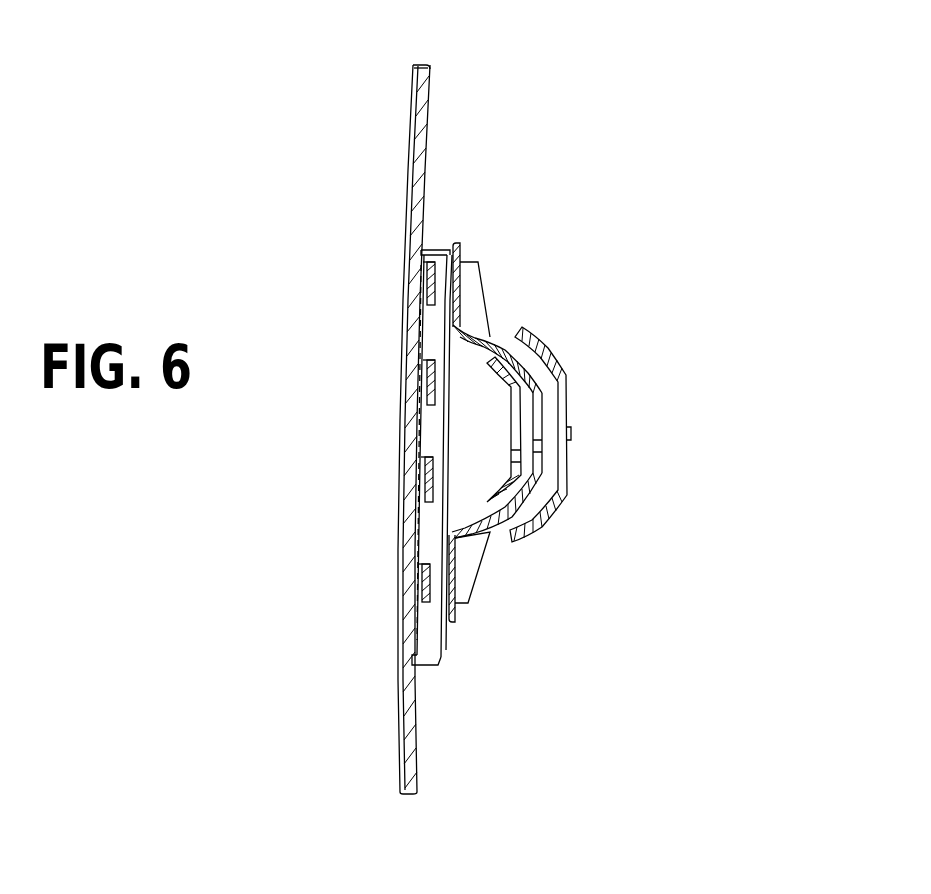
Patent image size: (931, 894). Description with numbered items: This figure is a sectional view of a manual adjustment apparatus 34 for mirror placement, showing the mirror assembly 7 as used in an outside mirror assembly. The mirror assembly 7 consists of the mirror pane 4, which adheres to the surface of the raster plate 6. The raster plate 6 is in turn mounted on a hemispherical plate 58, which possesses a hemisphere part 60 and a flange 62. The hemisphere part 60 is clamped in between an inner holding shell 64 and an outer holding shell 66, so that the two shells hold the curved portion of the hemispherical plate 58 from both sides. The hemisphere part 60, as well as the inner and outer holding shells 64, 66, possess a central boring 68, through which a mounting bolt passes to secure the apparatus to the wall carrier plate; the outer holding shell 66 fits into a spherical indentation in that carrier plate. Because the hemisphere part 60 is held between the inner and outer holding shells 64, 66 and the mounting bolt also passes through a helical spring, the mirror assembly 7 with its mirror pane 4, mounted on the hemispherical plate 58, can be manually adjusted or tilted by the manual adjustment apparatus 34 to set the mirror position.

The mirror pane 4 is at (414, 113).
The raster plate 6 is at (430, 66).
The mirror assembly 7 is at (458, 152).
The manual adjustment apparatus 34 is at (582, 320).
The hemispherical plate 58 is at (478, 565).
The hemisphere part 60 is at (483, 336).
The flange 62 is at (458, 243).
The inner holding shell 64 is at (522, 477).
The outer holding shell 66 is at (563, 374).
The central boring 68 is at (605, 417).